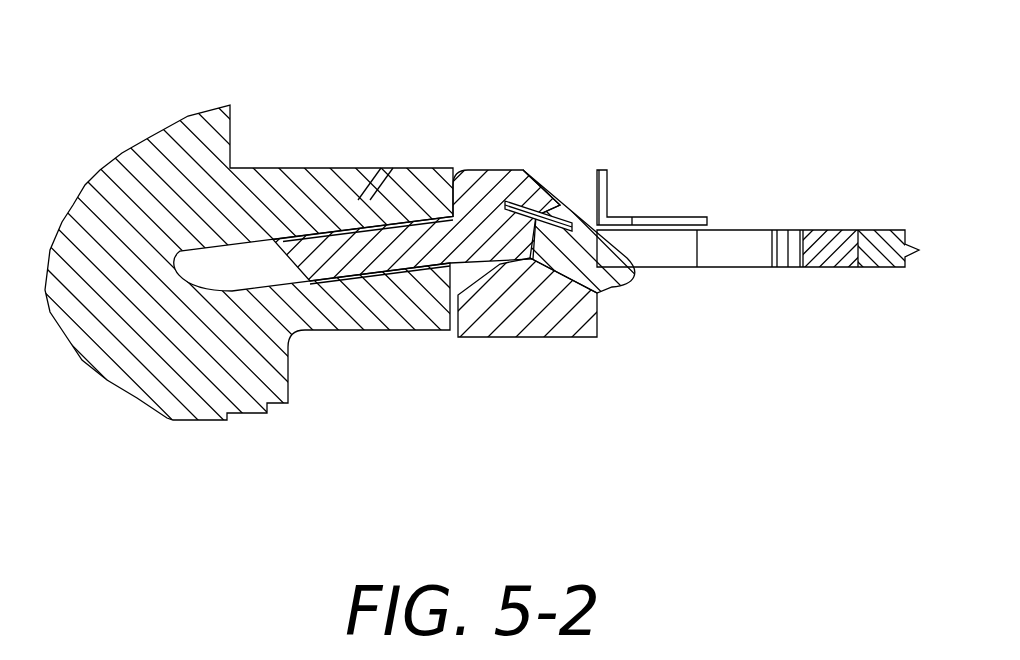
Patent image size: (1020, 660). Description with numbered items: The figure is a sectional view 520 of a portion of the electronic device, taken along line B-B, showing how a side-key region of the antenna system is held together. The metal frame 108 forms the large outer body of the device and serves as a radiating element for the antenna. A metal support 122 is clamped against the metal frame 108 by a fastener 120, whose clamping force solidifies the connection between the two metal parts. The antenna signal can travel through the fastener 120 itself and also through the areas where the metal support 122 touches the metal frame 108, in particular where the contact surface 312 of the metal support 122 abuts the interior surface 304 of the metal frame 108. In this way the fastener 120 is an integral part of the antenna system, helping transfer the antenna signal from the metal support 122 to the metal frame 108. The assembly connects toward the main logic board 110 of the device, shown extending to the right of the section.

The sectional view 520 is at (110, 42).
The metal frame 108 is at (130, 152).
The interior surface 304 is at (400, 190).
The contact surface 312 is at (378, 190).
The fastener 120 is at (538, 168).
The metal support 122 is at (537, 342).
The main logic board 110 is at (752, 230).